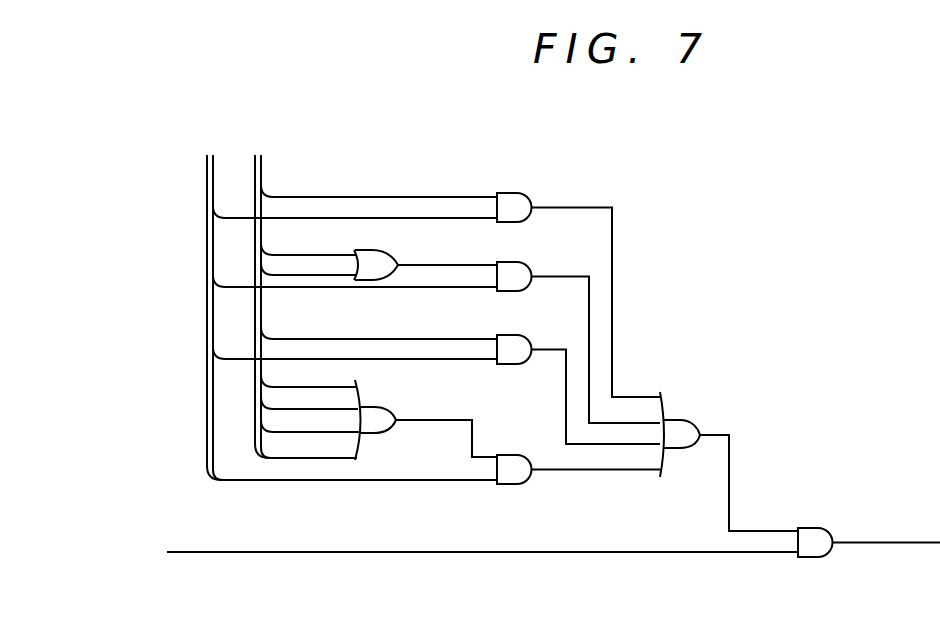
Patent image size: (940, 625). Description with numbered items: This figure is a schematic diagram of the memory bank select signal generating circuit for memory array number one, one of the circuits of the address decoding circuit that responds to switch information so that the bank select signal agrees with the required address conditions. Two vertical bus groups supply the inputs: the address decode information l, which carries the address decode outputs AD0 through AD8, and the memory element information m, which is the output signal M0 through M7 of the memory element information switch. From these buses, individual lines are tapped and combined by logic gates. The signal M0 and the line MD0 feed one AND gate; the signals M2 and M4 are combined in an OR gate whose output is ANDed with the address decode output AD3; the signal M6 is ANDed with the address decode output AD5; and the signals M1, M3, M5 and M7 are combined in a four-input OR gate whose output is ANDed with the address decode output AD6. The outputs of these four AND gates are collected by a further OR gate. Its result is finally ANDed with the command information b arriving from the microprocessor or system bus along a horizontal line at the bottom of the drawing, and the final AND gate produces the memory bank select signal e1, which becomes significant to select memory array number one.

The address decode information l is at (207, 448).
The memory element information m is at (265, 172).
The memory element information output signal M0 is at (385, 196).
The signal line MD0 is at (385, 217).
The memory element information output signal M2 is at (280, 254).
The memory element information output signal M4 is at (280, 274).
The address decode output AD3 is at (388, 287).
The memory element information output signal M6 is at (280, 338).
The address decode output AD5 is at (388, 359).
The memory element information output signal M1 is at (280, 386).
The memory element information output signal M3 is at (280, 408).
The memory element information output signal M5 is at (280, 431).
The memory element information output signal M7 is at (280, 457).
The address decode output AD6 is at (388, 480).
The command information b is at (413, 549).
The memory bank select signal e1 is at (883, 543).